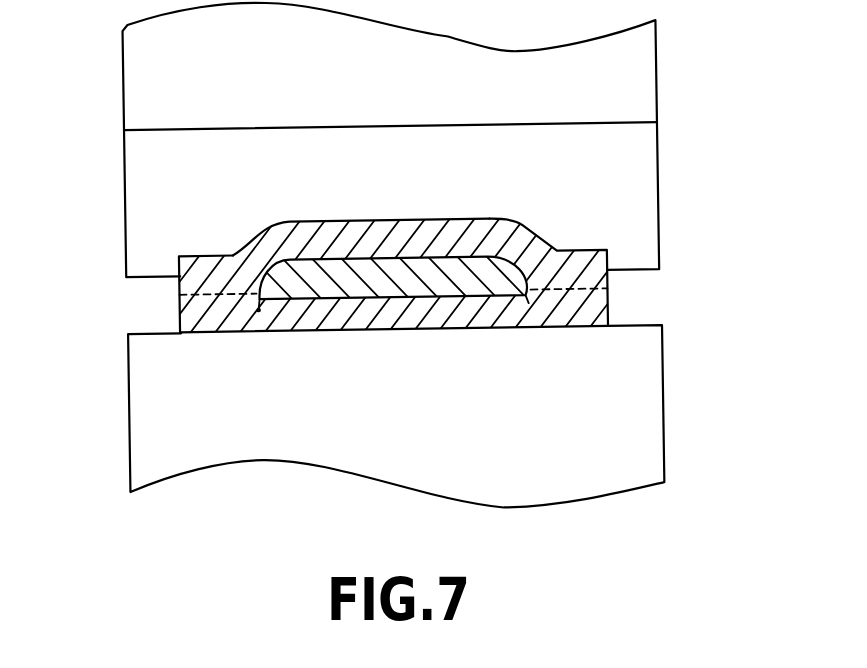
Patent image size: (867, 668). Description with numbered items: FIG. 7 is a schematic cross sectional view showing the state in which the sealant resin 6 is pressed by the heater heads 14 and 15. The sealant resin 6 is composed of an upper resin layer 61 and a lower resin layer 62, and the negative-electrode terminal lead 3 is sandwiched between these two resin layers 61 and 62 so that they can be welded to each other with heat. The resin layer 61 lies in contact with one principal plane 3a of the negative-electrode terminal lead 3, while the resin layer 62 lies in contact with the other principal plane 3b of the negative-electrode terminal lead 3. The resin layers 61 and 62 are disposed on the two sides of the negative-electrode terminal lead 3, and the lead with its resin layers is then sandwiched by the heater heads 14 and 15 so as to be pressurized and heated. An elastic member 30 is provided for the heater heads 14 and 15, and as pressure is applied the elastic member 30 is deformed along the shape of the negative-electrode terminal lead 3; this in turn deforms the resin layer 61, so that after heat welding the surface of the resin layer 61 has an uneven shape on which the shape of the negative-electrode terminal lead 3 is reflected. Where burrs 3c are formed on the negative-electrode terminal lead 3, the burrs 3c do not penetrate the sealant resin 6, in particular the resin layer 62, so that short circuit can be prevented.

The upper member 15 is at (645, 74).
The boundary line 30 is at (645, 140).
The lower member 14 is at (642, 417).
The sealing assembly 6 is at (628, 293).
The first plate 61 is at (533, 233).
The second plate 62 is at (603, 315).
The seal 3 is at (481, 258).
The seal top portion 3a is at (330, 258).
The seal core 3b is at (357, 302).
The seal lip tip 3c is at (258, 308).